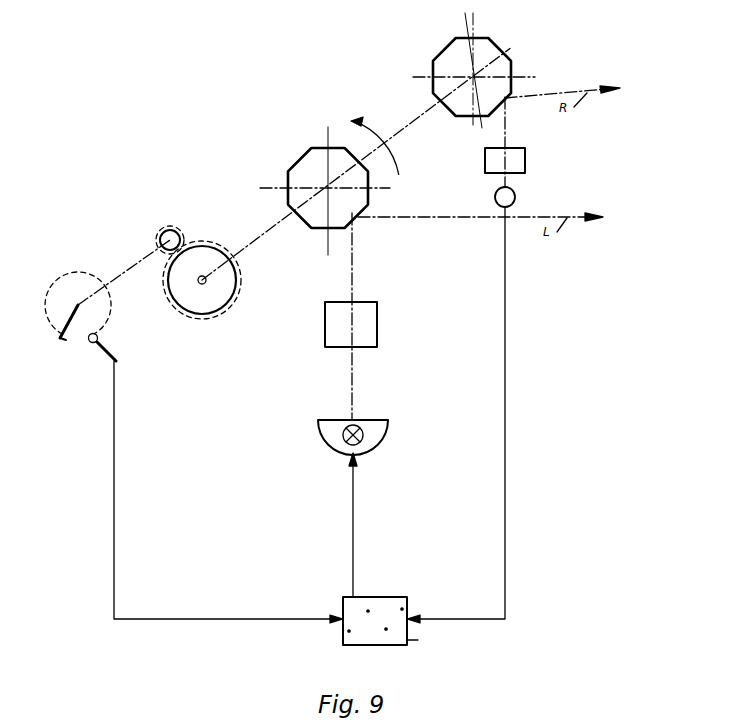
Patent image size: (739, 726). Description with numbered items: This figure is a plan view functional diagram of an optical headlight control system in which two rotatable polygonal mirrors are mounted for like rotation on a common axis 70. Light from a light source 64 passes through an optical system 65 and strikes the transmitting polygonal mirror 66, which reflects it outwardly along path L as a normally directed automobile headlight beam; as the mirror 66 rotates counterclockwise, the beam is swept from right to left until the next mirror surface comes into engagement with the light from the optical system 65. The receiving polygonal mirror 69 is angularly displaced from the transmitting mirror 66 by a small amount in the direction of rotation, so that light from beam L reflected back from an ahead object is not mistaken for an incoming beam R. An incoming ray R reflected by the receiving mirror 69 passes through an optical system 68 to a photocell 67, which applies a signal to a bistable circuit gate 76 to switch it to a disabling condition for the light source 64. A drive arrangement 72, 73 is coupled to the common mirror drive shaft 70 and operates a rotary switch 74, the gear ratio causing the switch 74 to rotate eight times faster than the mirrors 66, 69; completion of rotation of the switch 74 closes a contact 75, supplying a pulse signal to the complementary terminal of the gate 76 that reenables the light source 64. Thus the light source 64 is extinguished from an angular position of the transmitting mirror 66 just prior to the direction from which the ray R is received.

The light source 64 is at (383, 446).
The optical system 65 is at (377, 345).
The transmitting polygonal mirror 66 is at (351, 212).
The photocell 67 is at (486, 205).
The optical system 68 is at (570, 170).
The receiving polygonal mirror 69 is at (491, 43).
The common axis 70 is at (281, 217).
The drive arrangement element 72 is at (191, 229).
The drive arrangement element 73 is at (232, 252).
The rotary switch 74 is at (74, 303).
The contact 75 is at (127, 355).
The bistable circuit gate 76 is at (400, 598).